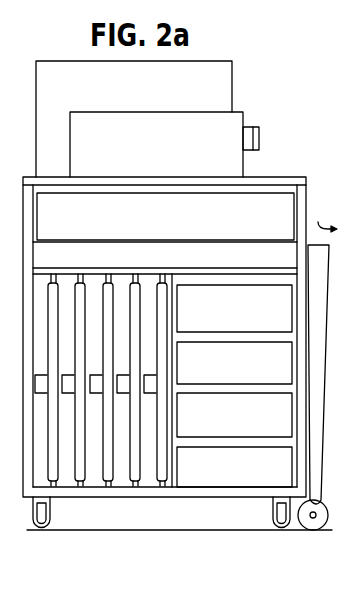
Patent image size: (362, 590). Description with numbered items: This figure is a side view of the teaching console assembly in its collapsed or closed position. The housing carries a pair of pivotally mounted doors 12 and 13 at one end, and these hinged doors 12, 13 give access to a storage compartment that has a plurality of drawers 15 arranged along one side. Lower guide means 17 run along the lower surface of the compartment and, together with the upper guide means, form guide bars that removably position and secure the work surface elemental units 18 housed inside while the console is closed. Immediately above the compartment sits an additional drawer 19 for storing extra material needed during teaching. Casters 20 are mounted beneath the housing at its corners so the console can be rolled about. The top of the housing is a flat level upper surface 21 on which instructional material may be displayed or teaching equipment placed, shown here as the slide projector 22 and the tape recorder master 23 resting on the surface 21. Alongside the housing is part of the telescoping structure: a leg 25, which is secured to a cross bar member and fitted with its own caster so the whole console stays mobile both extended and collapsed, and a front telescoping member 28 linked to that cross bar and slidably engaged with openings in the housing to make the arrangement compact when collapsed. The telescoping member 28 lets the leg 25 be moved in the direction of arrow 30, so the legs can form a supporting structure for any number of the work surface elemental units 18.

The pivotally mounted door 12 is at (27, 264).
The pivotally mounted door 13 is at (303, 202).
The drawers 15 is at (238, 317).
The lower guide means 17 is at (157, 488).
The work surface elemental units 18 is at (52, 358).
The additional drawer 19 is at (178, 225).
The casters 20 is at (47, 520).
The flat level upper surface 21 is at (270, 176).
The slide projector 22 is at (151, 120).
The tape recorder master unit 23 is at (225, 89).
The leg 25 is at (318, 427).
The front telescoping member 28 is at (186, 266).
The arrow 30 is at (332, 215).